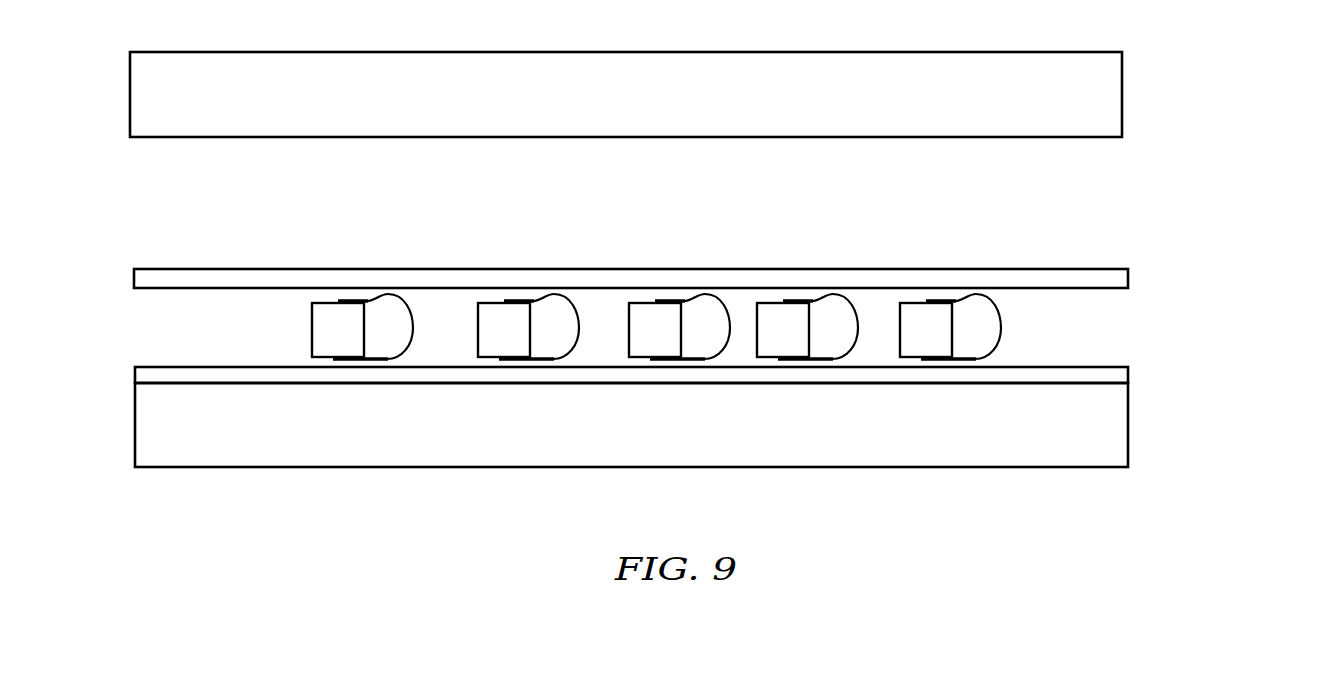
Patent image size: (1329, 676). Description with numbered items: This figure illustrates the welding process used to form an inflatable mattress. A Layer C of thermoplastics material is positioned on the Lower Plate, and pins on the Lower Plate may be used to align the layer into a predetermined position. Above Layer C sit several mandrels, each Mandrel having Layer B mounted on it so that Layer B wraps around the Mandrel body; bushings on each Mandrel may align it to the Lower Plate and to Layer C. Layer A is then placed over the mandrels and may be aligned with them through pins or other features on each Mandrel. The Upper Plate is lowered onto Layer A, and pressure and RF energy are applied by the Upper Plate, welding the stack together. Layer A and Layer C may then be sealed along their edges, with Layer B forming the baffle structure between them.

The upper plate Upper Plate is at (626, 94).
The lower plate Lower Plate is at (631, 425).
The layer A Layer A is at (1140, 282).
The layer B Layer B is at (1015, 333).
The layer C Layer C is at (1140, 375).
The mandrel Mandrel is at (300, 340).